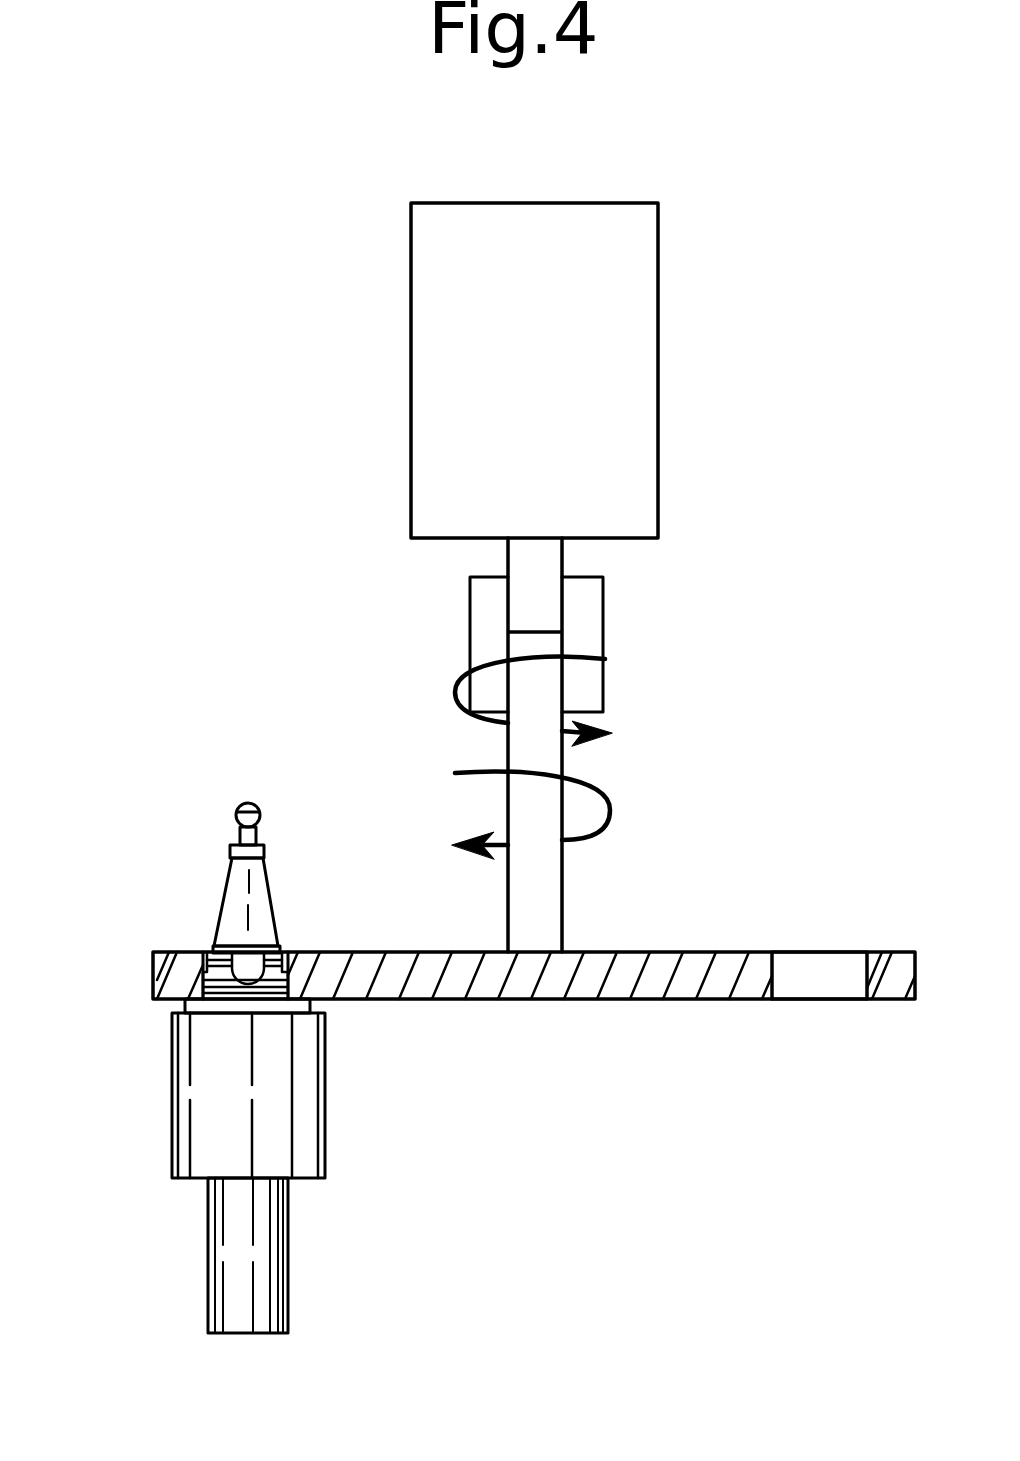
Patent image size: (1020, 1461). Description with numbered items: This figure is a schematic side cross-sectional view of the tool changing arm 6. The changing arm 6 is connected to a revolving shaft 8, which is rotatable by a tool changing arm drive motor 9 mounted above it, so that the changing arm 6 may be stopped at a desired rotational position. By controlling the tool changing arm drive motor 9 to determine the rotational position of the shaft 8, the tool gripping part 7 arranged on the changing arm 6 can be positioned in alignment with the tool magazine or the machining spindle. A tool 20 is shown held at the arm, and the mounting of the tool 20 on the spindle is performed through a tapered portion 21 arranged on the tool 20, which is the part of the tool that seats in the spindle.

The tool changing arm drive motor 9 is at (446, 379).
The revolving shaft 8 is at (485, 612).
The tool gripping part 7 is at (827, 946).
The tool changing arm 6 is at (534, 965).
The tapered portion 21 is at (237, 914).
The tool 20 is at (192, 1222).